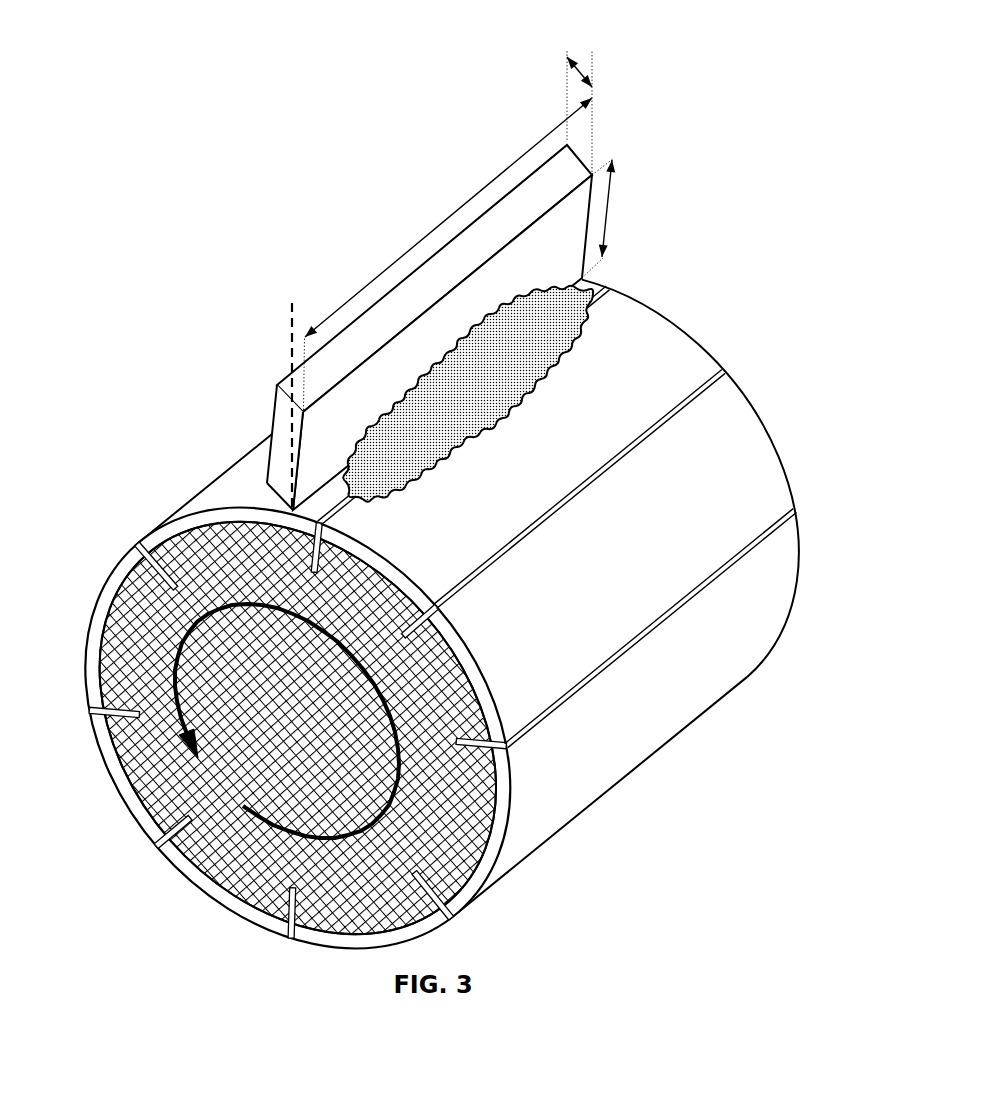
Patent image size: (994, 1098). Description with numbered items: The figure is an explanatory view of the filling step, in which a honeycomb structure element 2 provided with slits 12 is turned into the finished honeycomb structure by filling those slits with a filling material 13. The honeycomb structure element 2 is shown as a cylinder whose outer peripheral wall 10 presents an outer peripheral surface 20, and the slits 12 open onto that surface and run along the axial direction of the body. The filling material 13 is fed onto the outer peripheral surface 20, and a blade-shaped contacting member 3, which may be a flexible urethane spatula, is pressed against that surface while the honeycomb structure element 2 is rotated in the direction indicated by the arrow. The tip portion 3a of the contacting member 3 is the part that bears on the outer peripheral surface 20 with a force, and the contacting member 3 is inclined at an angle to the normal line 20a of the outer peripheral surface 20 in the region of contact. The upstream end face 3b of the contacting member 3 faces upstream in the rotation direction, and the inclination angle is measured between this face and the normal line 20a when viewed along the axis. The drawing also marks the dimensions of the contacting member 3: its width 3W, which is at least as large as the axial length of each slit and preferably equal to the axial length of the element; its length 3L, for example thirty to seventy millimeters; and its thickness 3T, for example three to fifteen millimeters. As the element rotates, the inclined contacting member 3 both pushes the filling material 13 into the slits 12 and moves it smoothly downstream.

The honeycomb structure element 2 is at (753, 462).
The contacting member 3 is at (278, 398).
The tip portion 3a is at (290, 508).
The upstream end face 3b is at (268, 433).
The thickness 3T is at (585, 68).
The width 3W is at (433, 223).
The length 3L is at (607, 217).
The outer peripheral wall 10 is at (122, 567).
The slits 12 is at (150, 830).
The filling material 13 is at (590, 313).
The outer peripheral surface 20 is at (630, 370).
The normal line 20a is at (287, 342).